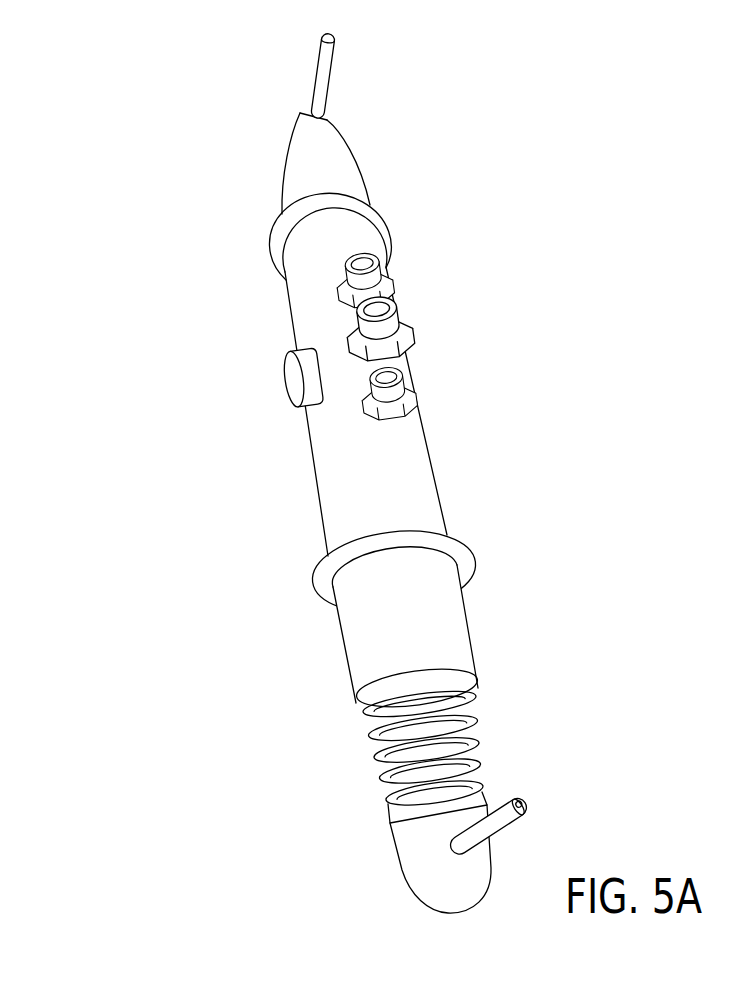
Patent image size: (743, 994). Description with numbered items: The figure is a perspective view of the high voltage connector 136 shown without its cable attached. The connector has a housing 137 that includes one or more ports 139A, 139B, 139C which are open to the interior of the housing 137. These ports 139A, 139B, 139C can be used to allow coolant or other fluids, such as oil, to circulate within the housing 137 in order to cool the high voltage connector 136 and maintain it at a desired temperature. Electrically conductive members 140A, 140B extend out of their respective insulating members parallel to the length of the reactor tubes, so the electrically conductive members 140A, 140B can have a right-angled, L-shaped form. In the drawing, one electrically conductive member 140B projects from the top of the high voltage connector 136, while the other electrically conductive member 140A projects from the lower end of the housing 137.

The high voltage connector 136 is at (222, 432).
The housing 137 is at (302, 308).
The port 139A is at (389, 261).
The port 139B is at (402, 306).
The port 139C is at (407, 392).
The electrically conductive member 140A is at (531, 804).
The electrically conductive member 140B is at (325, 73).